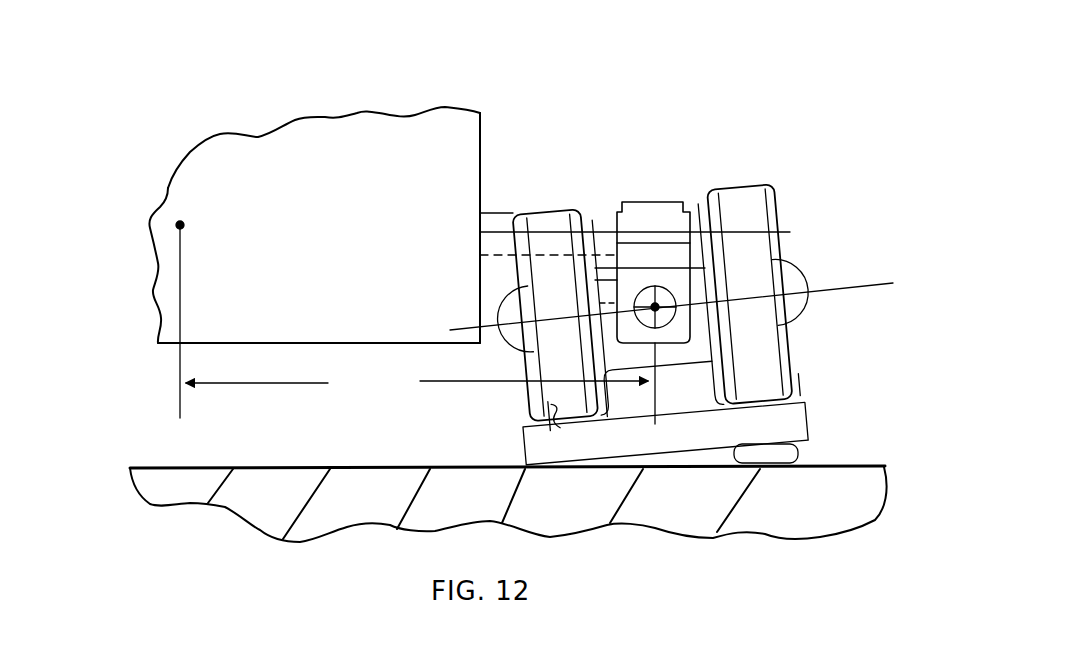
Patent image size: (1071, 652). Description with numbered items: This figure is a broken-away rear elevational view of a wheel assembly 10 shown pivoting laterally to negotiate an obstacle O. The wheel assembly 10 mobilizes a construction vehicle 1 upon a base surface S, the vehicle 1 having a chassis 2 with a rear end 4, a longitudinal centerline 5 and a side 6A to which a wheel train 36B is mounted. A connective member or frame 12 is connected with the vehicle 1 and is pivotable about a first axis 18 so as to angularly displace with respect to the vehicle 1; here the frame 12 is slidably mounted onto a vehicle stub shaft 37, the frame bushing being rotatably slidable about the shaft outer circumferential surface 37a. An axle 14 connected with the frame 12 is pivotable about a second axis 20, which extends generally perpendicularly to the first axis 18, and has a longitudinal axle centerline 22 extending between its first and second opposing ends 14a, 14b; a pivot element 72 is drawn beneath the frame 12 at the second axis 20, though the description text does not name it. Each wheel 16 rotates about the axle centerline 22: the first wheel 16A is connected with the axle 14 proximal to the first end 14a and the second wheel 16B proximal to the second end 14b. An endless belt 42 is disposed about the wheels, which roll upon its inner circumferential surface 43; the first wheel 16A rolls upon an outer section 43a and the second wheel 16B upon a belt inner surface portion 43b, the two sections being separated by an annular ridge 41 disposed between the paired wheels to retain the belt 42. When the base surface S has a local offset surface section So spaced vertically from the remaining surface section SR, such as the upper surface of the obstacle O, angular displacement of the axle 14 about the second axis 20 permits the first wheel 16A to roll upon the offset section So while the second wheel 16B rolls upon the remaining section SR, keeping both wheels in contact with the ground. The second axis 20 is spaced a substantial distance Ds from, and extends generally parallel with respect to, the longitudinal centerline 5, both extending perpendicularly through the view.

The construction vehicle 1 is at (262, 86).
The chassis 2 is at (344, 134).
The rear end 4 is at (229, 155).
The longitudinal centerline 5 is at (180, 222).
The side 6A is at (480, 150).
The wheel assembly 10 is at (660, 125).
The frame 12 is at (645, 200).
The axle 14 is at (712, 323).
The first axle end 14a is at (800, 287).
The second axle end 14b is at (510, 298).
The wheel 16 is at (803, 357).
The first wheel 16A is at (780, 203).
The second wheel 16B is at (500, 267).
The first axis 18 is at (665, 232).
The second axis 20 is at (655, 300).
The axle centerline 22 is at (891, 284).
The wheel train 36B is at (798, 126).
The stub shaft 37 is at (496, 219).
The shaft outer circumferential surface 37a is at (603, 210).
The ridge 41 is at (630, 390).
The endless belt 42 is at (659, 440).
The belt inner circumferential surface 43 is at (754, 398).
The belt inner surface outer section 43a is at (800, 397).
The belt inner surface portion 43b is at (530, 403).
The pivot pin 72 is at (663, 318).
The distance Ds is at (417, 386).
The base surface S is at (852, 461).
The offset surface section So is at (777, 433).
The remaining surface section SR is at (877, 468).
The obstacle O is at (793, 455).